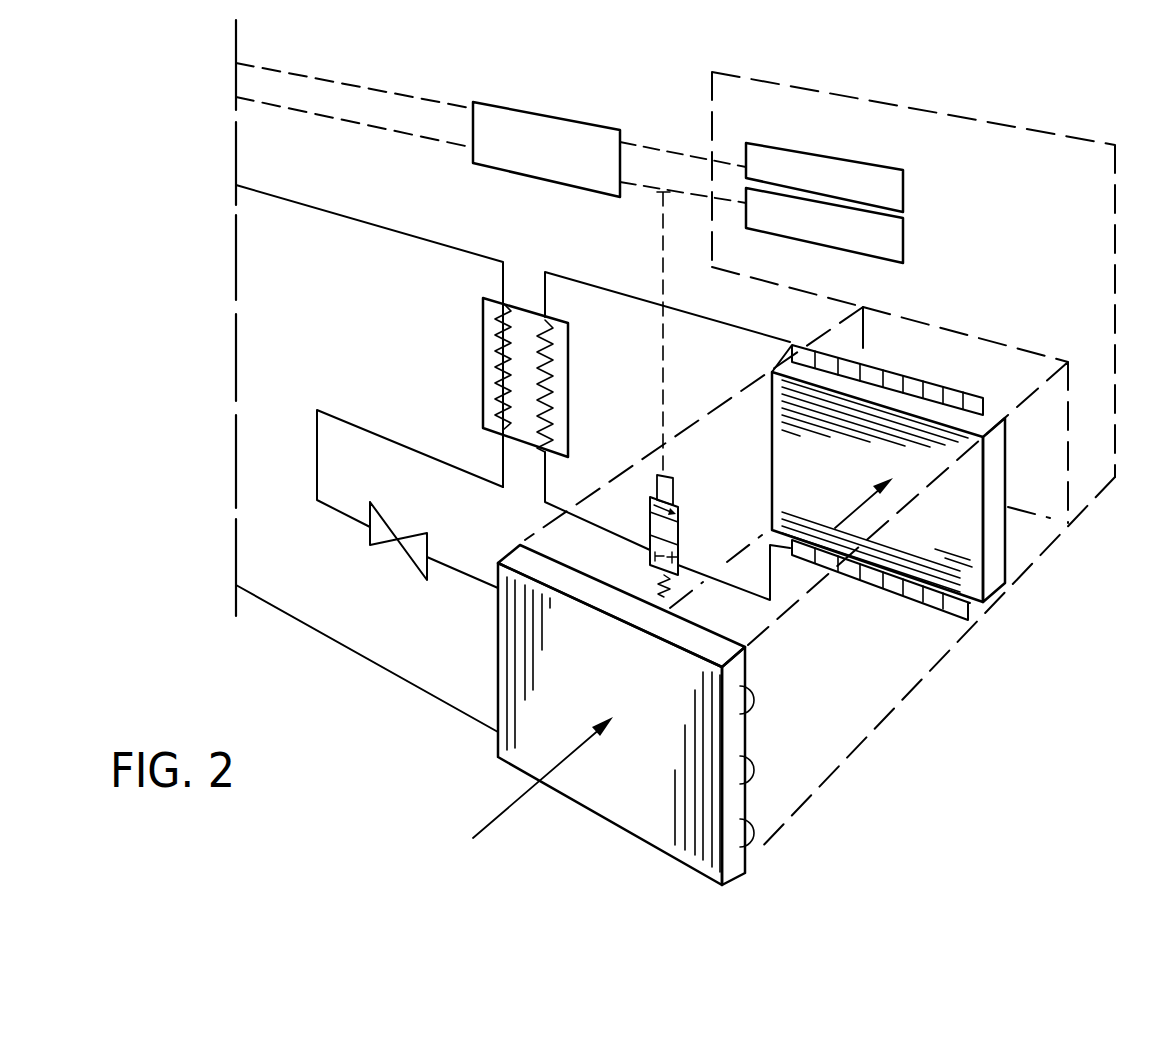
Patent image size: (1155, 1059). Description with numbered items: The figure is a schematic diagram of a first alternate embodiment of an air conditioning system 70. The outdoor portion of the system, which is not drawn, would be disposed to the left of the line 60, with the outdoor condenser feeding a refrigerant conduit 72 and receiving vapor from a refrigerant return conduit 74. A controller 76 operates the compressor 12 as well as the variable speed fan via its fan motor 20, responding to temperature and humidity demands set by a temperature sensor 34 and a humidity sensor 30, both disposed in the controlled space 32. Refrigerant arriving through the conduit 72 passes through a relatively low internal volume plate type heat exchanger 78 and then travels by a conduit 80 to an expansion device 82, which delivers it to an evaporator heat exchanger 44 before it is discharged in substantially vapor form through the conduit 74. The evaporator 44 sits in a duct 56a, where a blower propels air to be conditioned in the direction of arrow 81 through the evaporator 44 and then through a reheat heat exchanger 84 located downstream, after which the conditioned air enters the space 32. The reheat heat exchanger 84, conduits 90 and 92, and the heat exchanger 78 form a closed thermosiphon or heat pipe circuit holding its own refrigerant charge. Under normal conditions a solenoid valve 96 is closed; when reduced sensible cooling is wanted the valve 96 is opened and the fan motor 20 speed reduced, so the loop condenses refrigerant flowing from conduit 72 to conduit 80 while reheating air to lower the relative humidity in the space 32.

The compressor 12 is at (353, 76).
The fan motor 20 is at (353, 132).
The humidity sensor 30 is at (788, 243).
The controlled space 32 is at (1018, 221).
The temperature sensor 34 is at (822, 158).
The evaporator heat exchanger 44 is at (662, 826).
The duct 56a is at (905, 700).
The line 60 is at (236, 458).
The air conditioning system 70 is at (996, 310).
The refrigerant conduit 72 is at (312, 207).
The refrigerant return conduit 74 is at (284, 612).
The controller 76 is at (562, 118).
The heat exchanger 78 is at (483, 365).
The conduit 80 is at (432, 457).
The arrow 81 is at (497, 818).
The expansion device 82 is at (430, 545).
The reheat heat exchanger 84 is at (968, 596).
The conduit 90 is at (613, 537).
The conduit 92 is at (625, 295).
The solenoid valve 96 is at (678, 510).